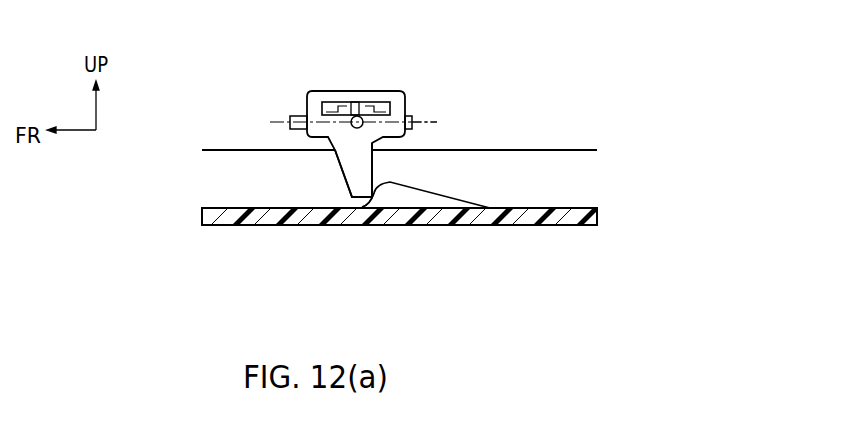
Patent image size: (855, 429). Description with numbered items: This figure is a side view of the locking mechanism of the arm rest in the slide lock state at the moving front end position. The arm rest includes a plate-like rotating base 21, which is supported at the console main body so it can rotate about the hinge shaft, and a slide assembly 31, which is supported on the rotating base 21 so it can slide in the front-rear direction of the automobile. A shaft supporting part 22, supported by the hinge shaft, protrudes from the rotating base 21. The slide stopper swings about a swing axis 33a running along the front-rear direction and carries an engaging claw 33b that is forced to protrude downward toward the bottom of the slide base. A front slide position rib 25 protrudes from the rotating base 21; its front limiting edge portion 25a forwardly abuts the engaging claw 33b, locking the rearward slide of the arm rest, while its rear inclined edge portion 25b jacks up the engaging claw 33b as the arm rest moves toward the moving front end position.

The rotating base 21 is at (231, 202).
The shaft supporting part 22 is at (380, 93).
The front slide position rib 25 is at (428, 200).
The front limiting edge portion 25a is at (368, 203).
The rear inclined edge portion 25b is at (453, 193).
The slide assembly 31 is at (219, 155).
The swing axis 33a is at (424, 118).
The engaging claw 33b is at (355, 175).